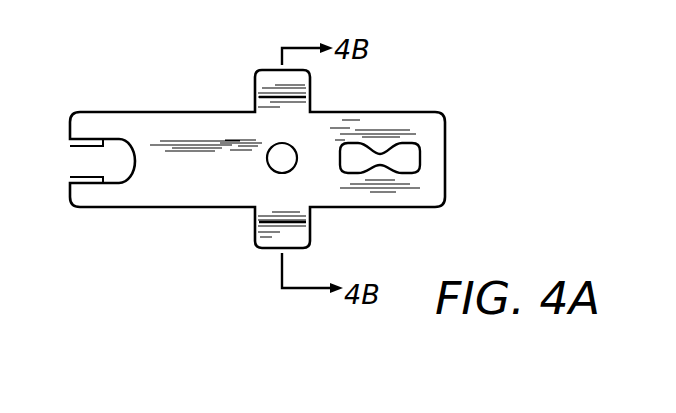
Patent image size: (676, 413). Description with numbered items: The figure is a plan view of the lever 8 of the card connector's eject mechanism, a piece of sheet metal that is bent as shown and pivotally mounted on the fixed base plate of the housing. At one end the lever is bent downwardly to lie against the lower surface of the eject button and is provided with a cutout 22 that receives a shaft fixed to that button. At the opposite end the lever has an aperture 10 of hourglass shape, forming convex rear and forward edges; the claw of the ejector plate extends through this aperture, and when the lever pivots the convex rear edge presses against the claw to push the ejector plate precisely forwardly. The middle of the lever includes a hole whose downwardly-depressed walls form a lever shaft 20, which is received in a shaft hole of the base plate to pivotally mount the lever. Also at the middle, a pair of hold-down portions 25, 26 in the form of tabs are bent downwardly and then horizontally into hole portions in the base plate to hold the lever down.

The lever 8 is at (178, 124).
The aperture 10 is at (408, 158).
The lever shaft 20 is at (296, 153).
The cutout 22 is at (134, 157).
The hold-down portion 25 is at (268, 240).
The hold-down portion 26 is at (266, 80).